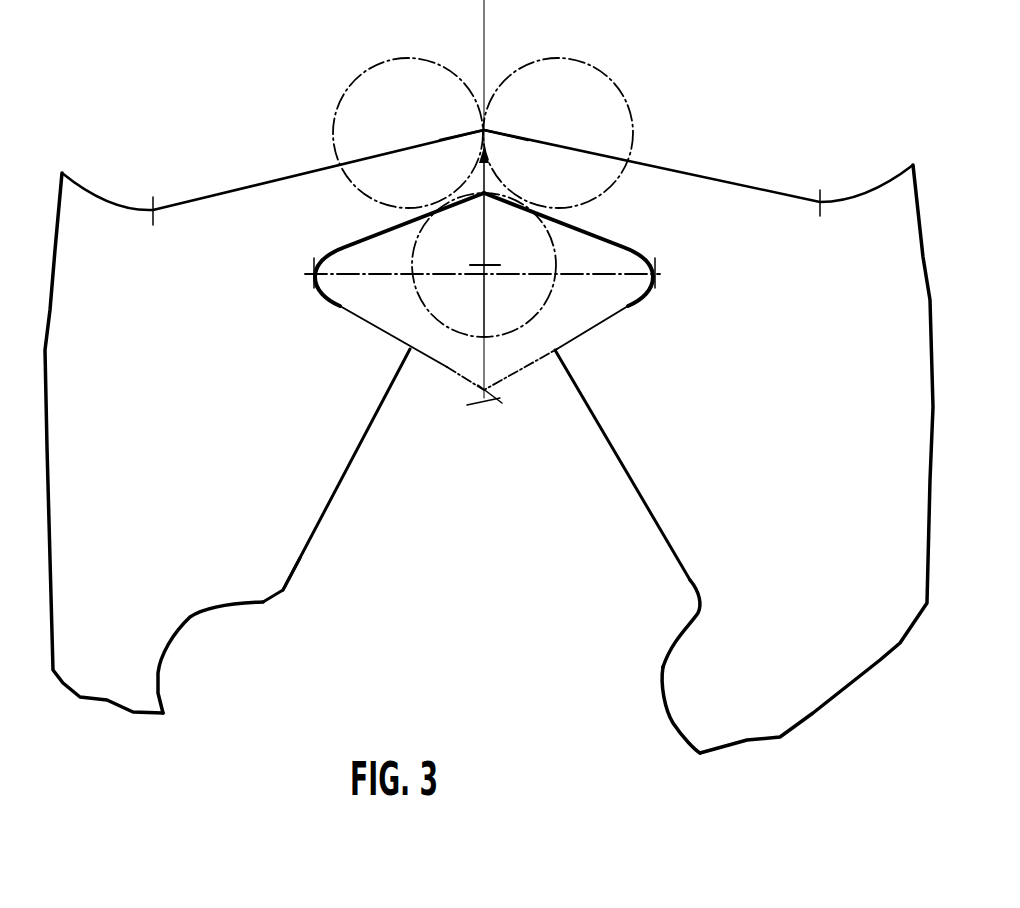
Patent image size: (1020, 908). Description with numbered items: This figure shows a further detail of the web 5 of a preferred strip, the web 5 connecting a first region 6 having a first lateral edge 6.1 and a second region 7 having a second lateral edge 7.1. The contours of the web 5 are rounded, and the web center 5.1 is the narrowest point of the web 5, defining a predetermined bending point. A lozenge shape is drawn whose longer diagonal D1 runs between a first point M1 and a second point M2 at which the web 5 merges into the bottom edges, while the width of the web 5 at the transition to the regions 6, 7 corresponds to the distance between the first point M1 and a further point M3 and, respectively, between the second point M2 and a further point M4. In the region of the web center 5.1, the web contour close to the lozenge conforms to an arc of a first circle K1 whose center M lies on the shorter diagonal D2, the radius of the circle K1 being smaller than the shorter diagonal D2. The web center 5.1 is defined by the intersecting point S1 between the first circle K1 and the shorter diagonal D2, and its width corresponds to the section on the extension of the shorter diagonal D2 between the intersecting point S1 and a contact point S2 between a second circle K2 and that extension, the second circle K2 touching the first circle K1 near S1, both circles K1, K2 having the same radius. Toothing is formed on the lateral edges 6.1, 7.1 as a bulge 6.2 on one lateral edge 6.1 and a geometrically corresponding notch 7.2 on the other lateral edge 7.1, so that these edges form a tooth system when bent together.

The web 5 is at (303, 210).
The web center 5.1 is at (480, 151).
The first region 6 is at (663, 507).
The first lateral edge 6.1 is at (680, 570).
The bulge 6.2 is at (683, 717).
The second region 7 is at (327, 472).
The second lateral edge 7.1 is at (293, 570).
The notch 7.2 is at (163, 660).
The first circle K1 is at (540, 287).
The second circle K2 is at (372, 98).
The intersecting point S1 is at (490, 192).
The contact point S2 is at (487, 123).
The longer diagonal D1 is at (607, 263).
The shorter diagonal D2 is at (490, 318).
The center M is at (482, 262).
The first point M1 is at (657, 272).
The second point M2 is at (313, 280).
The further point M3 is at (823, 207).
The further point M4 is at (150, 217).